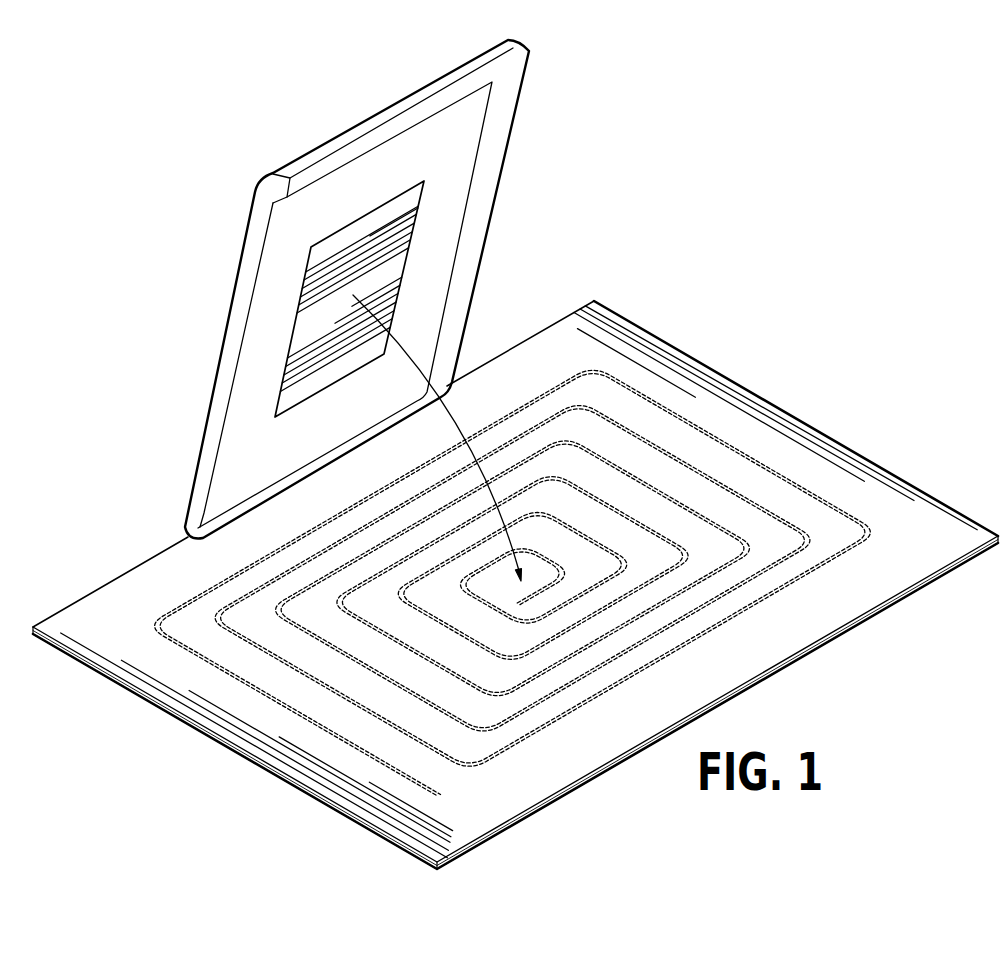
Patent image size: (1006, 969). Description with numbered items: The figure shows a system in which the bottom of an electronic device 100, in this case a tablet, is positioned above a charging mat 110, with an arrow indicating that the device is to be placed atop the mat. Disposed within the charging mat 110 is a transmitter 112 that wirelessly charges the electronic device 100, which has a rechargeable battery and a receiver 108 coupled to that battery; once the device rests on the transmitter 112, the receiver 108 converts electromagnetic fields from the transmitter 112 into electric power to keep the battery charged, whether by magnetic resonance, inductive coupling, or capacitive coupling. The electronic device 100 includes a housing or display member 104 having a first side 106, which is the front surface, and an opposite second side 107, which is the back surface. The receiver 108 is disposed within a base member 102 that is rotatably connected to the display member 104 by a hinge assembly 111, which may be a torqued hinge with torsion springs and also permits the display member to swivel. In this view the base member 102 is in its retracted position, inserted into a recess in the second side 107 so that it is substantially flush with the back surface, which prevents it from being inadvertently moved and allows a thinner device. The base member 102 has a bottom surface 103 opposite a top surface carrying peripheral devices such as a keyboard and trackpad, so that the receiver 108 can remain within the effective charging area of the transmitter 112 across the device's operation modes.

The electronic device 100 is at (221, 270).
The base member 102 is at (362, 289).
The bottom surface 103 is at (361, 178).
The display member 104 is at (495, 199).
The first side 106 is at (394, 103).
The second side 107 is at (484, 146).
The receiver 108 is at (333, 386).
The charging mat 110 is at (797, 420).
The hinge assembly 111 is at (227, 342).
The transmitter 112 is at (156, 627).